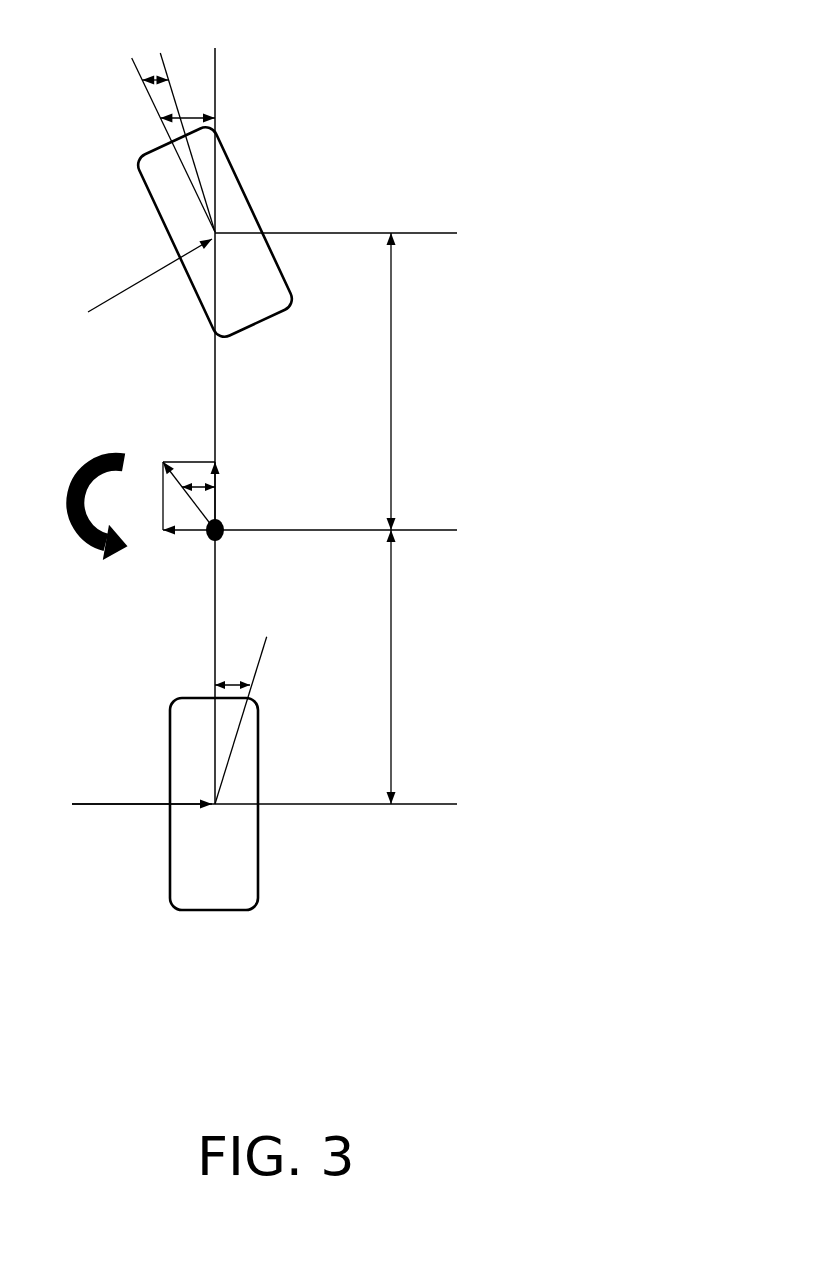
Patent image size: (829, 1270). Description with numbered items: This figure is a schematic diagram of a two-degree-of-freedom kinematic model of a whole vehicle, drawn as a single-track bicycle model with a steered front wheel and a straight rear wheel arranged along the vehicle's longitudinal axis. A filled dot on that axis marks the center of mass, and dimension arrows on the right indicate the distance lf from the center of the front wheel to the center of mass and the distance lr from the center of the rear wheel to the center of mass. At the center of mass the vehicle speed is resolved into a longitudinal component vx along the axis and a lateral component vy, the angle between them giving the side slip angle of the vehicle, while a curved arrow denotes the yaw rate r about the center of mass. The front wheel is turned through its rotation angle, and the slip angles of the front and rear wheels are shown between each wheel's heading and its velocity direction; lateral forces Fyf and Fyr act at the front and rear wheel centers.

The distance from center of front wheel to center of mass lf is at (405, 381).
The distance from center of rear wheel to center of mass lr is at (405, 667).
The front lateral tire force Fyf is at (150, 271).
The longitudinal velocity vx is at (230, 496).
The lateral velocity vy is at (189, 556).
The yaw rate r is at (77, 511).
The rear lateral tire force Fyr is at (142, 786).